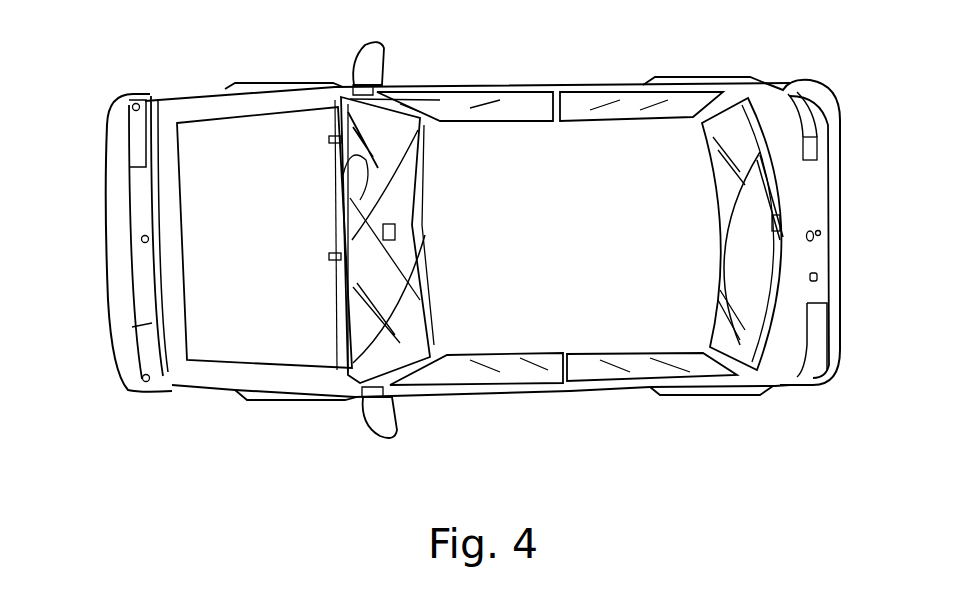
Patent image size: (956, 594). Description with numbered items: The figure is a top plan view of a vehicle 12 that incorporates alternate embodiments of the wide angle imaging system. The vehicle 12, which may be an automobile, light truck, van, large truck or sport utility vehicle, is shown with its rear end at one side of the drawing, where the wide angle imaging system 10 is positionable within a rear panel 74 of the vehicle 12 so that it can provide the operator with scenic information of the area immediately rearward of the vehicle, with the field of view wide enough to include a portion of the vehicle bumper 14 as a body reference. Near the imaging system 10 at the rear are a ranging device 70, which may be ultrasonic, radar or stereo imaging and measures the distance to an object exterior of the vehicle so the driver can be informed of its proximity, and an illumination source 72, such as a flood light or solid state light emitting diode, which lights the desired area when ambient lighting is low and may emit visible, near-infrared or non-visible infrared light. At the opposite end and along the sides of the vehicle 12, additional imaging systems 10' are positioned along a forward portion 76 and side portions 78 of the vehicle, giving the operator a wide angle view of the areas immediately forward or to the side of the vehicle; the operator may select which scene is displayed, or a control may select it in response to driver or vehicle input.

The wide angle imaging system 10 is at (845, 206).
The imaging system 10' is at (185, 256).
The vehicle 12 is at (453, 87).
The vehicle bumper 14 is at (832, 350).
The ranging device 70 is at (818, 278).
The illumination source 72 is at (821, 233).
The rear panel 74 is at (790, 160).
The forward portion 76 is at (100, 270).
The side portion 78 is at (208, 86).